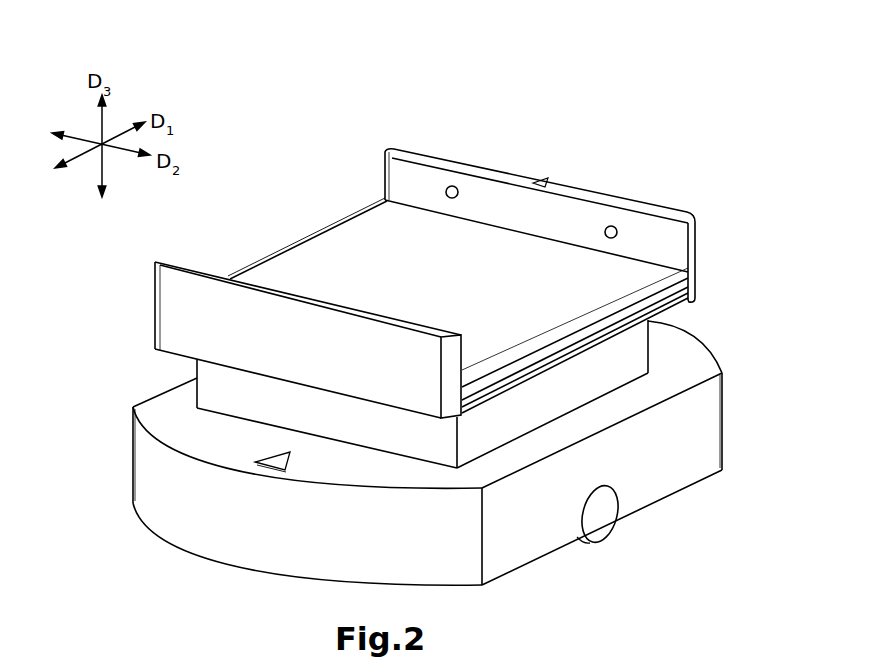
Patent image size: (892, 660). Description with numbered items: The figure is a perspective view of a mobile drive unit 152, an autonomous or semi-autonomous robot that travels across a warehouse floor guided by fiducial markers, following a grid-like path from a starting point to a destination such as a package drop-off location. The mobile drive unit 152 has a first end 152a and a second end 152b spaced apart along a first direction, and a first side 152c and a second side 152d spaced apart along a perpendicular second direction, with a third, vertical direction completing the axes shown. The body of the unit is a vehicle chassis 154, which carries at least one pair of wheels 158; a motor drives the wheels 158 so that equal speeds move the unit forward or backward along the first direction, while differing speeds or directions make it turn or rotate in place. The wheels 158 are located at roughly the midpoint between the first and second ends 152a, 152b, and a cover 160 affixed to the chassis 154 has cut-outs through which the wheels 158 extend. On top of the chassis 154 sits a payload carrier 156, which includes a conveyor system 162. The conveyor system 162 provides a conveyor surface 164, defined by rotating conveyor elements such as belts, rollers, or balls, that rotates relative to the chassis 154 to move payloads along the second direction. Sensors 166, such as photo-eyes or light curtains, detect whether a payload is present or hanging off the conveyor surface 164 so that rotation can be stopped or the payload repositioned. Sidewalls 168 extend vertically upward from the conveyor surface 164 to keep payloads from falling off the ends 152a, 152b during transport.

The mobile drive unit 152 is at (678, 138).
The first end 152a is at (212, 523).
The second end 152b is at (727, 332).
The first side 152c is at (533, 532).
The second side 152d is at (133, 468).
The vehicle chassis 154 is at (728, 410).
The payload carrier 156 is at (446, 157).
The wheels 158 is at (603, 517).
The cover 160 is at (165, 407).
The conveyor system 162 is at (357, 232).
The conveyor surface 164 is at (300, 260).
The sensors 166 is at (457, 188).
The sidewalls 168 is at (397, 147).